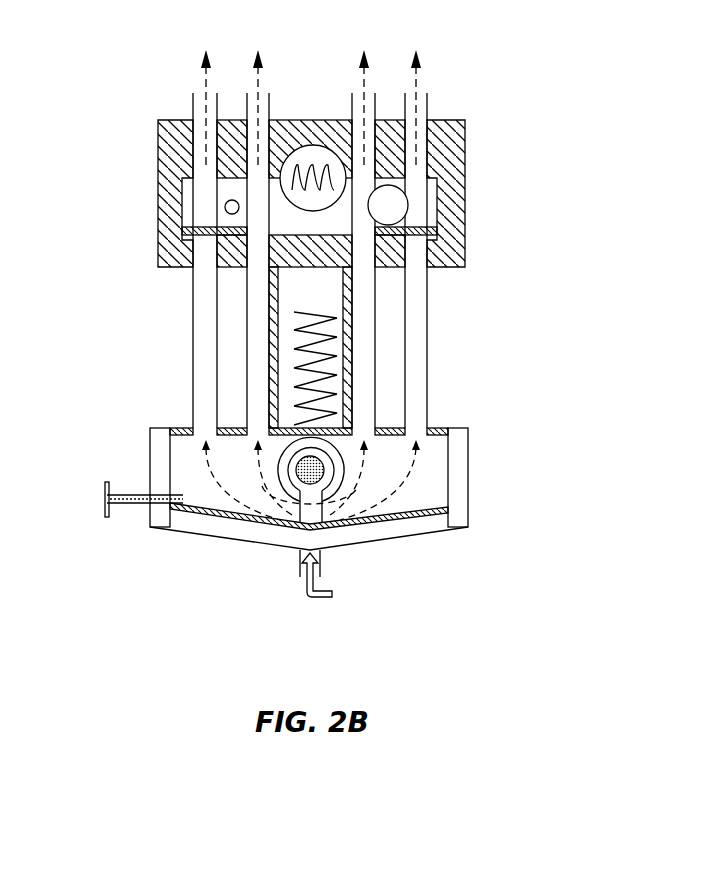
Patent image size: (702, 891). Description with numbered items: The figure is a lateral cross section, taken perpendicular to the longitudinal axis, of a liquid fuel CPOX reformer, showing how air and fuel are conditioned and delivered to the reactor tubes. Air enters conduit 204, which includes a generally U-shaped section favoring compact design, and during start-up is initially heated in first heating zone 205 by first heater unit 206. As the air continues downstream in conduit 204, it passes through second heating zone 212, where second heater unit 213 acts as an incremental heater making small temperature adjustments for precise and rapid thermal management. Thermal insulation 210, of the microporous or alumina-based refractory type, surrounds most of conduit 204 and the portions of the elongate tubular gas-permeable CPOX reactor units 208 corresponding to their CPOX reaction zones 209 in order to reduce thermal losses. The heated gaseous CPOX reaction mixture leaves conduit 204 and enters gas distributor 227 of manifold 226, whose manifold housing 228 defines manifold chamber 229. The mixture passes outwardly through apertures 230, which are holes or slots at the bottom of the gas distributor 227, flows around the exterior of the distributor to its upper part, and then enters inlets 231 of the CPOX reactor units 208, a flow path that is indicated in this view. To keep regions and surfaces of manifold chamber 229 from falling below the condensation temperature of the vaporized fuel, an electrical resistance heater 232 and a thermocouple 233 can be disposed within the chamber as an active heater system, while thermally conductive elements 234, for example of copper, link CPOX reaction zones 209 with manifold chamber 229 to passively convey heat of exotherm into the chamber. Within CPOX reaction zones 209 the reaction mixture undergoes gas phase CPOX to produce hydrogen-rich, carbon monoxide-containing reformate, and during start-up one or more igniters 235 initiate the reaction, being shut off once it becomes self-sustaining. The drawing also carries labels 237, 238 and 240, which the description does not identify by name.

The conduit 204 is at (283, 120).
The first heating zone 205 is at (318, 152).
The first heater unit 206 is at (336, 120).
The CPOX reactor units 208 is at (428, 318).
The CPOX reaction zones 209 is at (370, 238).
The thermal insulation 210 is at (440, 128).
The second heating zone 212 is at (341, 370).
The second heater unit 213 is at (335, 352).
The manifold 226 is at (456, 452).
The gas distributor 227 is at (273, 478).
The manifold housing 228 is at (468, 511).
The manifold chamber 229 is at (420, 488).
The apertures 230 is at (309, 503).
The inlets 231 is at (253, 423).
The electrical resistance heater 232 is at (190, 513).
The thermocouple 233 is at (135, 492).
The thermally conductive elements 234 is at (310, 221).
The igniters 235 is at (413, 208).
The ports 237 is at (240, 224).
The passage 238 is at (302, 237).
The ball valve 240 is at (225, 201).